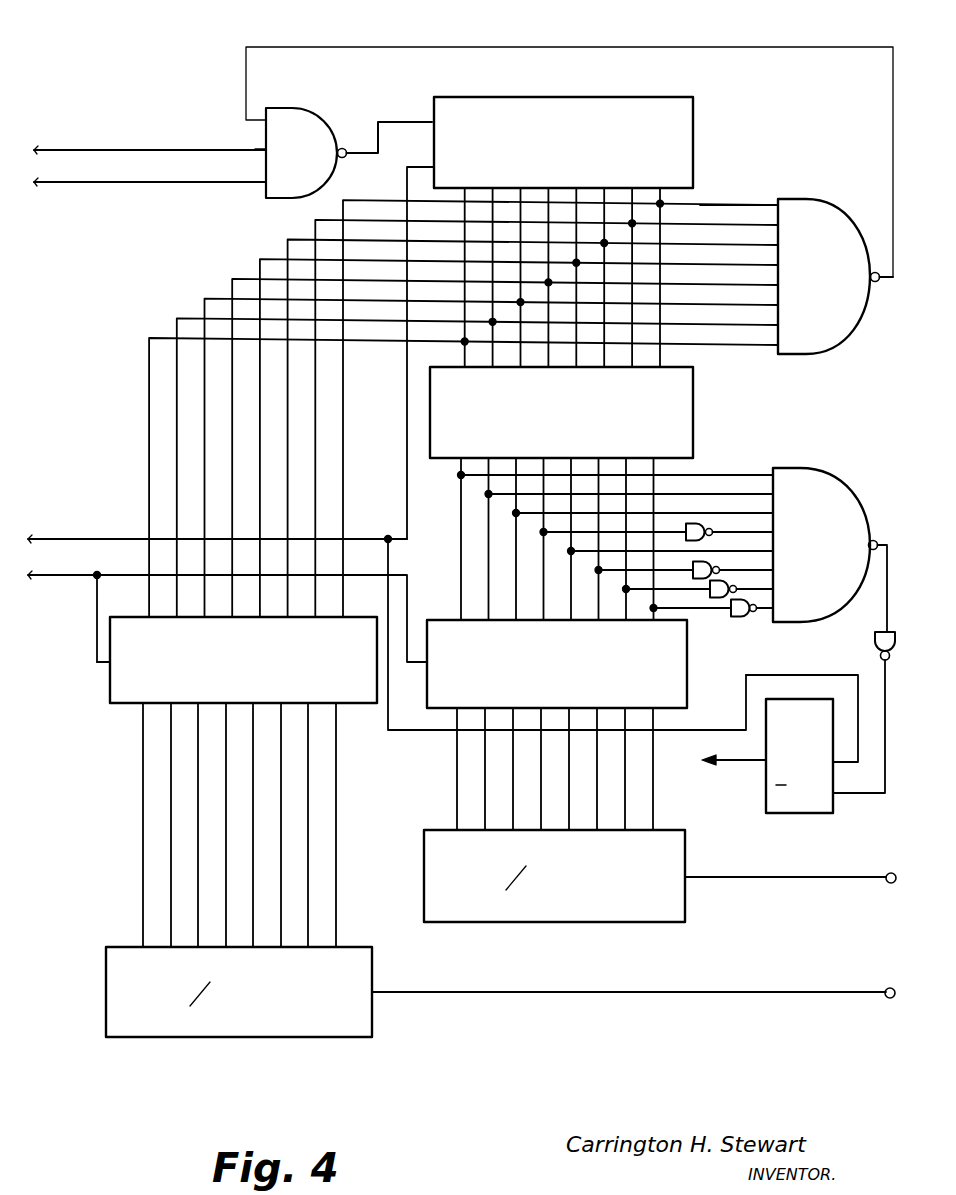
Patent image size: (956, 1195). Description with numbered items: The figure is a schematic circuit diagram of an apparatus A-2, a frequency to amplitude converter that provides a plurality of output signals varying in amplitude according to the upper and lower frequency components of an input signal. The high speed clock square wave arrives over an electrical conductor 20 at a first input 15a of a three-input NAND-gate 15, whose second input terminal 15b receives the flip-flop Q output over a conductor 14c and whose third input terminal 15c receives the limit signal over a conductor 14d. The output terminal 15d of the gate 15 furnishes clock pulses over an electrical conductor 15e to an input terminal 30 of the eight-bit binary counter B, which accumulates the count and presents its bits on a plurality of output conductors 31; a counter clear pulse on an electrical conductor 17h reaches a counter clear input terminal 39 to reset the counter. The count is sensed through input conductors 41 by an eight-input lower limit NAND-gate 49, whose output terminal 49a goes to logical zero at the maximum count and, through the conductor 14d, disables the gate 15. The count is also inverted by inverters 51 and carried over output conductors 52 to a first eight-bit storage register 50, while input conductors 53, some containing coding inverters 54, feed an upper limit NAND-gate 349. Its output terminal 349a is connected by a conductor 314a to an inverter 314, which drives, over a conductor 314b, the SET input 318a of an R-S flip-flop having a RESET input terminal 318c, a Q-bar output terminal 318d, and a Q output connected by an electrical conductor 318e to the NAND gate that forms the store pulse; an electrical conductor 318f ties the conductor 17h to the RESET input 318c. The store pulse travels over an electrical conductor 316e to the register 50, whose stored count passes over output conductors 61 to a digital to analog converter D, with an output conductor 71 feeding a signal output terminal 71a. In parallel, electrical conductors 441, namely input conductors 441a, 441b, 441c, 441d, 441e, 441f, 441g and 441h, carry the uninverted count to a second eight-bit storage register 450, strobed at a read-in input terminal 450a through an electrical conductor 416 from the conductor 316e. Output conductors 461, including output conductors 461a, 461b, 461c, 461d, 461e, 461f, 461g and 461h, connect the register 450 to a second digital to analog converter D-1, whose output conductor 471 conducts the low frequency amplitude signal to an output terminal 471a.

The electrical conductor 14d is at (396, 47).
The three-input NAND-gate 15 is at (316, 108).
The first input 15a is at (264, 150).
The second input terminal 15b is at (264, 198).
The third input terminal 15c is at (258, 118).
The output terminal 15d is at (346, 148).
The electrical conductor 15e is at (385, 120).
The electrical conductor 20 is at (76, 153).
The conductor 14c is at (148, 182).
The input terminal 30 is at (428, 110).
The counter clear input terminal 39 is at (432, 166).
The electrical conductor 17h is at (405, 192).
The output conductors 31 is at (666, 354).
The input conductors 41 is at (727, 196).
The lower limit NAND-gate 49 is at (794, 198).
The output terminal 49a is at (878, 284).
The electrical conductors 441 is at (416, 408).
The input conductor 441a is at (146, 366).
The input conductor 441b is at (176, 322).
The input conductor 441c is at (204, 302).
The input conductor 441d is at (232, 282).
The input conductor 441e is at (260, 427).
The input conductor 441f is at (288, 405).
The input conductor 441g is at (315, 380).
The input conductor 441h is at (343, 356).
The inverters 51 is at (694, 384).
The output conductors 52 is at (456, 559).
The input conductors 53 is at (704, 468).
The coding inverters 54 is at (742, 620).
The upper limit NAND-gate 349 is at (794, 467).
The output terminal 349a is at (875, 540).
The inverter 314 is at (876, 640).
The conductor 314a is at (884, 608).
The conductor 314b is at (856, 794).
The eight-bit storage register 50 is at (688, 644).
The electrical conductor 316e is at (408, 577).
The second eight-bit storage register 450 is at (108, 692).
The electrical conductor 416 is at (95, 625).
The read-in input terminal 450a is at (108, 660).
The output conductors 461 is at (232, 825).
The output conductor 461a is at (143, 764).
The output conductor 461b is at (171, 783).
The output conductor 461c is at (198, 804).
The output conductor 461d is at (226, 828).
The output conductor 461e is at (253, 756).
The output conductor 461f is at (281, 781).
The output conductor 461g is at (308, 805).
The output conductor 461h is at (336, 827).
The output conductors 61 is at (660, 818).
The output conductor 71 is at (747, 878).
The signal output terminal 71a is at (888, 874).
The output conductor 471 is at (528, 992).
The output terminal 471a is at (886, 988).
The SET input 318a is at (838, 806).
The RESET input terminal 318c is at (842, 756).
The Q-bar output terminal 318d is at (766, 793).
The electrical conductor 318e is at (740, 756).
The electrical conductor 318f is at (746, 688).
The apparatus A-2 is at (136, 92).
The eight-bit binary counter B is at (573, 123).
The digital to analog converter D is at (616, 924).
The second eight-bit digital to analog converter D-1 is at (264, 1038).